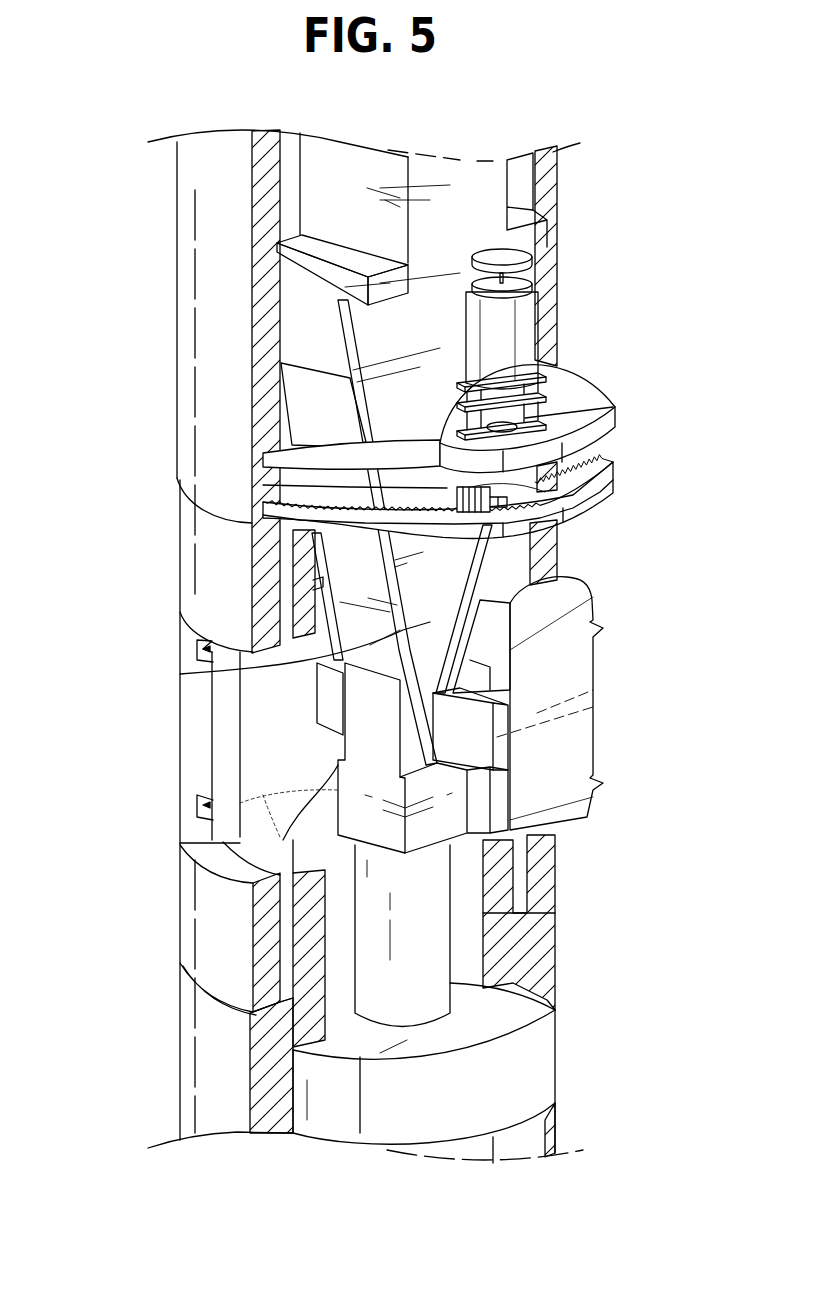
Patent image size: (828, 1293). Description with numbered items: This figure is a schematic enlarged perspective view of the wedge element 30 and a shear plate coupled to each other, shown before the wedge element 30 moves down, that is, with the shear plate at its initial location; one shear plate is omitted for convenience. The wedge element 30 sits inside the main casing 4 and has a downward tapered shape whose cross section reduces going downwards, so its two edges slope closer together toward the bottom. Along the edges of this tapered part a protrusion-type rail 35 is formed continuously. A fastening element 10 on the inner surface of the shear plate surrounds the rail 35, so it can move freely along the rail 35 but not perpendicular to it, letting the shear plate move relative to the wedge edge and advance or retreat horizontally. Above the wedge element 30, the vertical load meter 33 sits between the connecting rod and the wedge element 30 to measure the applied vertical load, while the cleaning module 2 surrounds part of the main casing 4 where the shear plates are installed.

The cleaning module 2 is at (172, 906).
The main casing 4 is at (190, 298).
The fastening element 10 is at (450, 735).
The wedge element 30 is at (443, 565).
The vertical load meter 33 is at (490, 188).
The rail 35 is at (473, 617).